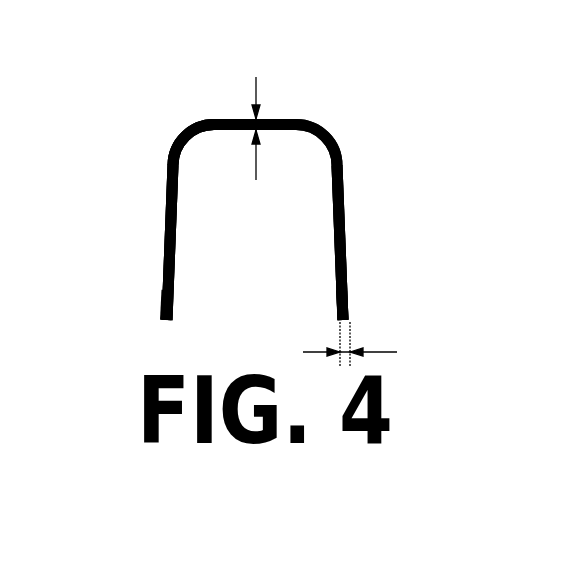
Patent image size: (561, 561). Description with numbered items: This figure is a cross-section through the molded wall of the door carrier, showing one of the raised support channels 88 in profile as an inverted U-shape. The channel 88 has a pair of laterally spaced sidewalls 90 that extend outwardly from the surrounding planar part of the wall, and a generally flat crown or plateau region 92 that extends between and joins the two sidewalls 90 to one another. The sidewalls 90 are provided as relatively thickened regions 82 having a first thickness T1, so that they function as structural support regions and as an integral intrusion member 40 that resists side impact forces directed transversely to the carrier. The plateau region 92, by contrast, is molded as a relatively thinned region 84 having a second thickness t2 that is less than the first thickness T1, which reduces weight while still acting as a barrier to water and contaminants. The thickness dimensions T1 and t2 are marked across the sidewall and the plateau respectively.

The intrusion member 40 is at (505, 77).
The thickened region 82 is at (163, 240).
The thinned region 84 is at (213, 118).
The channel 88 is at (402, 118).
The sidewall 90 is at (162, 292).
The plateau region 92 is at (275, 119).
The second thickness t2 is at (254, 88).
The first thickness T1 is at (318, 350).